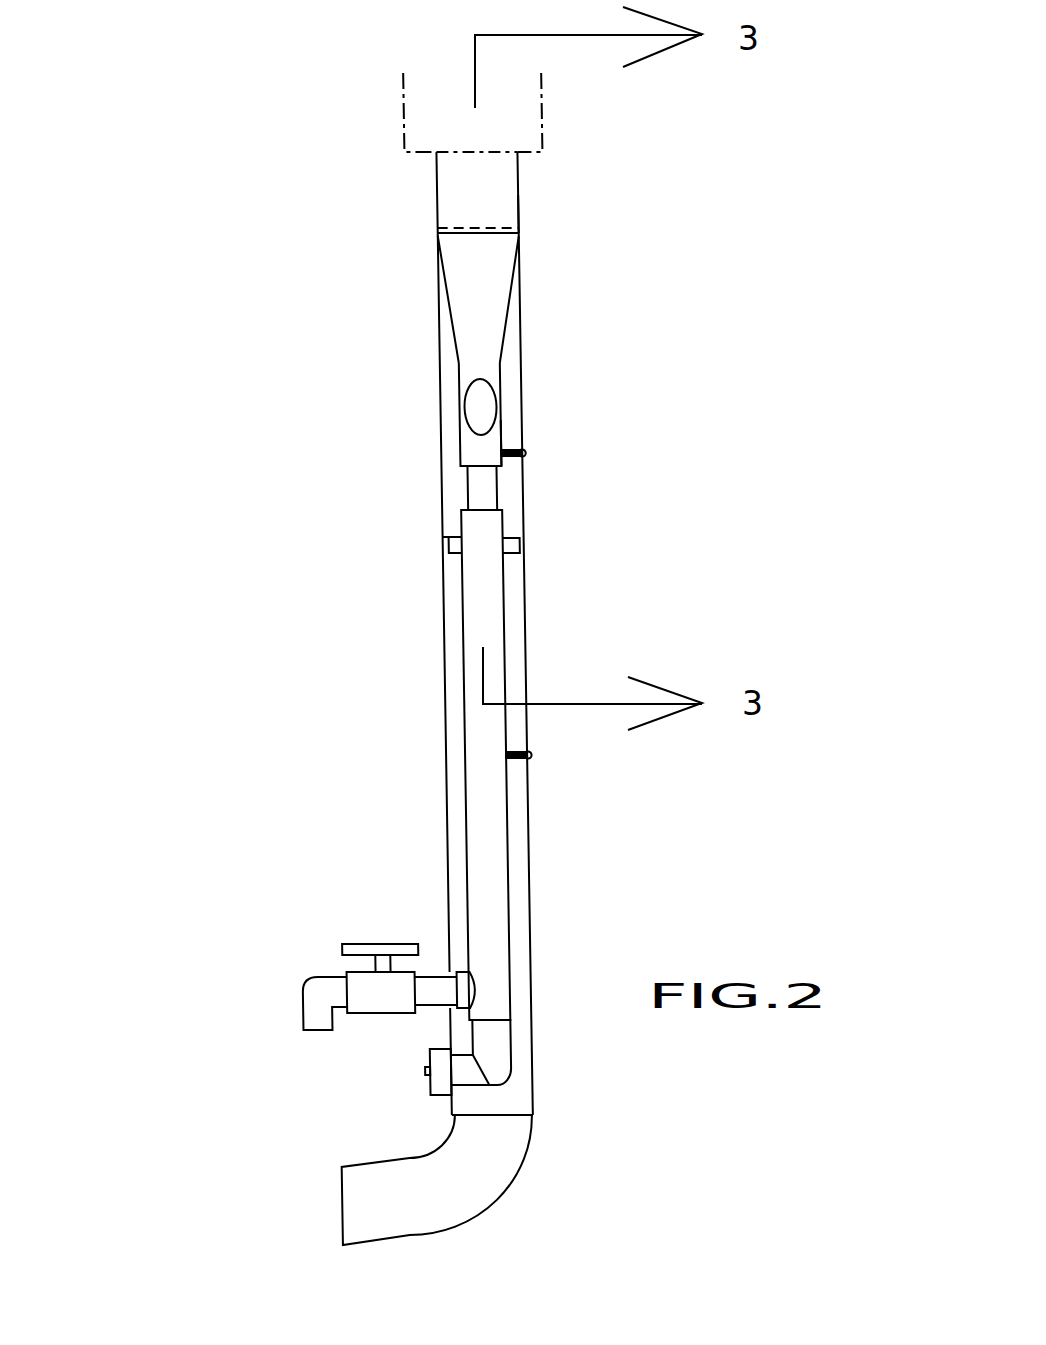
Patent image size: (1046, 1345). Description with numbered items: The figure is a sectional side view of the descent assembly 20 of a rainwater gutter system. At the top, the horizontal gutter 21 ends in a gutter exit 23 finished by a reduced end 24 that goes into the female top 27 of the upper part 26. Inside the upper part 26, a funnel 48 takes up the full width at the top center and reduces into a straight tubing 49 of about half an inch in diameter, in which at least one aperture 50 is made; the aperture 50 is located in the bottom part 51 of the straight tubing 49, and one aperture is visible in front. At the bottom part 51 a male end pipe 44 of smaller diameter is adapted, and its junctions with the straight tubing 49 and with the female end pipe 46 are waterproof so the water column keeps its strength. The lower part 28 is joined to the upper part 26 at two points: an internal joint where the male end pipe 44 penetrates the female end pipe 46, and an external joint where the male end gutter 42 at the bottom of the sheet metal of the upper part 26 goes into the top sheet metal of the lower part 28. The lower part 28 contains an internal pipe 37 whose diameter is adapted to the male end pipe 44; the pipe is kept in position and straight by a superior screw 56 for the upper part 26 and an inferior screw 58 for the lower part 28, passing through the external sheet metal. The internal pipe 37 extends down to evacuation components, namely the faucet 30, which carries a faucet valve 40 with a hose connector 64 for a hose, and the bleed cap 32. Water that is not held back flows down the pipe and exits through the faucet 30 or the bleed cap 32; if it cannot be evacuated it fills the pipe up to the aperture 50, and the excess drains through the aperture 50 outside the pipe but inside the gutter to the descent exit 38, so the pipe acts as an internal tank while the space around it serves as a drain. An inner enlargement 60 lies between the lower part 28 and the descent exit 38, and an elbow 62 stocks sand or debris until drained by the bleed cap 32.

The descent assembly 20 is at (399, 626).
The horizontal gutter 21 is at (468, 125).
The gutter exit 23 is at (468, 190).
The reduced end 24 is at (440, 222).
The upper part 26 is at (437, 357).
The female top 27 is at (518, 218).
The lower part 28 is at (444, 734).
The faucet 30 is at (323, 989).
The bleed cap 32 is at (440, 1088).
The internal pipe 37 is at (492, 855).
The descent exit 38 is at (339, 1198).
The faucet valve 40 is at (389, 945).
The male end gutter 42 is at (442, 537).
The male end pipe 44 is at (497, 500).
The female end pipe 46 is at (482, 558).
The funnel 48 is at (478, 272).
The straight tubing 49 is at (500, 360).
The aperture 50 is at (498, 397).
The bottom part 51 is at (495, 432).
The superior screw 56 is at (527, 453).
The inferior screw 58 is at (532, 755).
The inner enlargement 60 is at (533, 1110).
The elbow 62 is at (493, 1050).
The hose connector 64 is at (302, 1020).